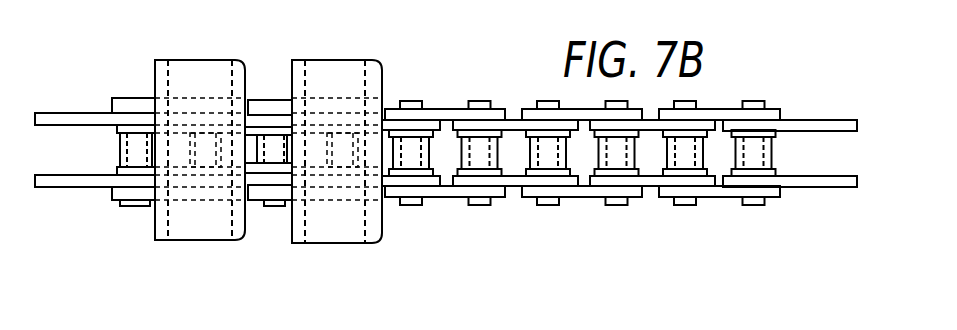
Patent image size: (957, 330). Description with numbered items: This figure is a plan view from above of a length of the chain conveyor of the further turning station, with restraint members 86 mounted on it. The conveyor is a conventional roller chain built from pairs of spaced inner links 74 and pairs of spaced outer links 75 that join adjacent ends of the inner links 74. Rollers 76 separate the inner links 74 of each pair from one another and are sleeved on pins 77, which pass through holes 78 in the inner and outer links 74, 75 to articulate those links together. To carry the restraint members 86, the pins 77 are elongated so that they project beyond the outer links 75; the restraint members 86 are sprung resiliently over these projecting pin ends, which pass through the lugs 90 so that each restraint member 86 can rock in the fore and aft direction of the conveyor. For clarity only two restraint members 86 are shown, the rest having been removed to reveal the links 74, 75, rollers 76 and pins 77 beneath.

The inner link 74 is at (90, 113).
The outer link 75 is at (502, 110).
The roller 76 is at (755, 153).
The pin 77 is at (483, 100).
The hole 78 is at (72, 187).
The restraint member 86 is at (311, 55).
The lug 90 is at (120, 203).